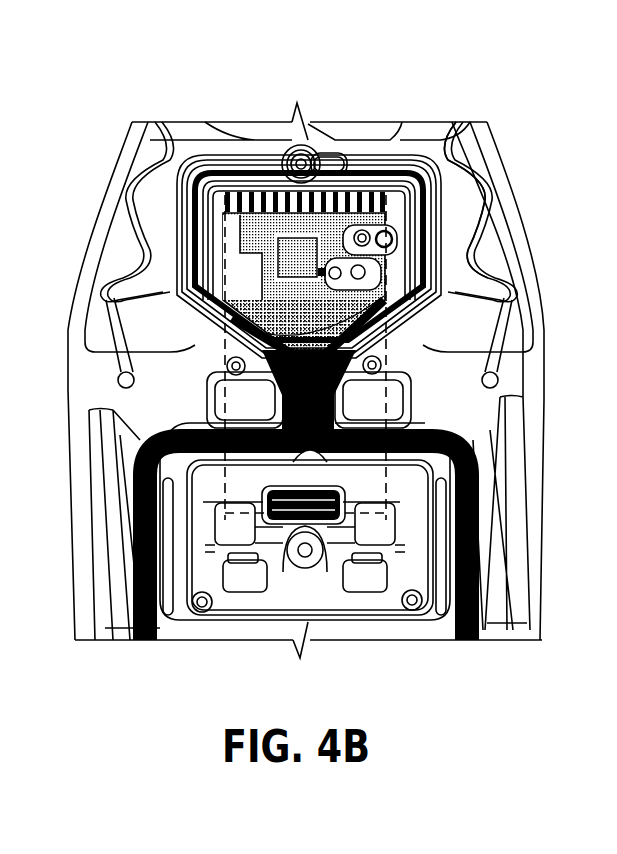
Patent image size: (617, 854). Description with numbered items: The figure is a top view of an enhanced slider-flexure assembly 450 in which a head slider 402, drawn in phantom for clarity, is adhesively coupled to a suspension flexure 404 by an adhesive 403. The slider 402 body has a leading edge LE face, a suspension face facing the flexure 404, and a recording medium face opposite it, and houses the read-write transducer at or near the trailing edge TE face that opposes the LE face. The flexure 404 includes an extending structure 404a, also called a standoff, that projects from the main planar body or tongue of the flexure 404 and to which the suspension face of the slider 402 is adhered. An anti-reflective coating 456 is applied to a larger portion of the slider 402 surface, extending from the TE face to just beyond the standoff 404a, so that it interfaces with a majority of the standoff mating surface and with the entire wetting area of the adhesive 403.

The slider-flexure assembly 450 is at (166, 80).
The anti-reflective coating 456 is at (342, 162).
The suspension flexure 404 is at (485, 178).
The trailing edge face TE is at (568, 202).
The extending structure 404a is at (390, 320).
The adhesive 403 is at (227, 355).
The head slider 402 is at (321, 484).
The leading edge face LE is at (402, 509).